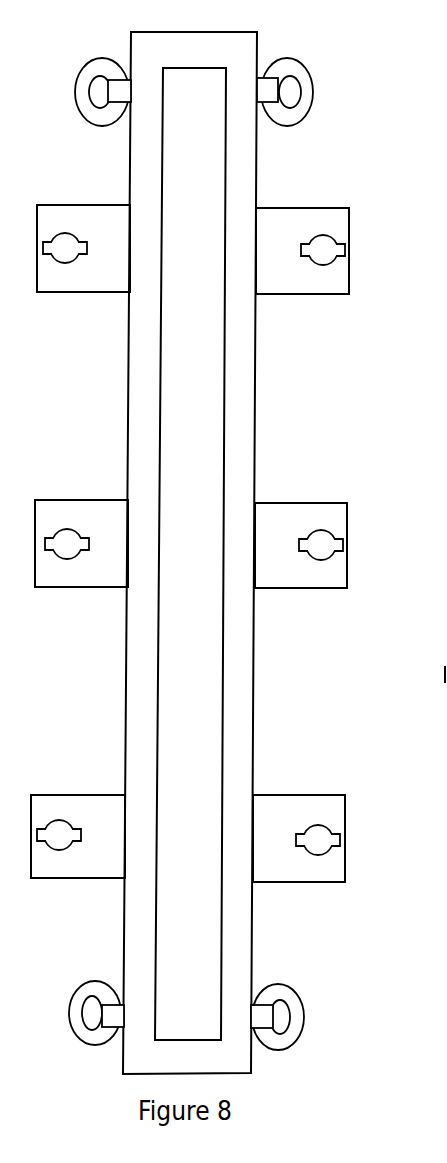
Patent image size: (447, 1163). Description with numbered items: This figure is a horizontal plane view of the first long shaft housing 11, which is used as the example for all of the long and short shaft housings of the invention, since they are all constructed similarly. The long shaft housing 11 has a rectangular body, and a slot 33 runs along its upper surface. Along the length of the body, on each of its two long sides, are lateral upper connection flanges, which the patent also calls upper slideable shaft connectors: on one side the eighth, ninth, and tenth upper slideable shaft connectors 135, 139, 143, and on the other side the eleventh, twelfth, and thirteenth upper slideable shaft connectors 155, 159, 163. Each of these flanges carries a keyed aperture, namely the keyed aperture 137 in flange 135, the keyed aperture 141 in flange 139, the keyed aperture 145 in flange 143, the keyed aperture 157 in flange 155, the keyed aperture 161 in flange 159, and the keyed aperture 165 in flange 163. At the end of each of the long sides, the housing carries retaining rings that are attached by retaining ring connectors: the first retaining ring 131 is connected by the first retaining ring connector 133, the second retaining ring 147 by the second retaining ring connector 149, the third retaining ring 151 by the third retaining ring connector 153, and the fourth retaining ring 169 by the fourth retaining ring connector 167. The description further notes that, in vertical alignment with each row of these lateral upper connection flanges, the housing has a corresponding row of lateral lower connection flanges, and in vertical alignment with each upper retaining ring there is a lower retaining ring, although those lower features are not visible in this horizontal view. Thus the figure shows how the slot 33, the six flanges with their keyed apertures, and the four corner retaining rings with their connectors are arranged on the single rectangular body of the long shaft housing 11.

The long shaft housing 11 is at (257, 390).
The slot 33 is at (225, 345).
The first retaining ring on first long shaft housing 131 is at (284, 58).
The first retaining ring connector on first long shaft housing 133 is at (290, 79).
The eighth upper slideable shaft connector 135 is at (304, 207).
The keyed aperture in eighth upper slideable shaft connector 137 is at (333, 237).
The ninth upper slideable shaft connector 139 is at (282, 503).
The keyed aperture in ninth upper slideable shaft connector 141 is at (333, 530).
The tenth upper slideable shaft connector 143 is at (330, 825).
The keyed aperture in tenth upper slideable shaft connector 145 is at (346, 852).
The second retaining ring on first long shaft housing 147 is at (280, 986).
The second retaining ring connector on first long shaft housing 149 is at (273, 1012).
The third retaining ring on first long shaft housing 151 is at (88, 63).
The third retaining ring connector on first long shaft housing 153 is at (100, 90).
The eleventh upper slideable shaft connector 155 is at (55, 235).
The keyed aperture in eleventh upper slideable shaft connector 157 is at (73, 293).
The twelfth upper slideable shaft connector 159 is at (55, 530).
The keyed aperture in twelfth upper slideable shaft connector 161 is at (70, 588).
The thirteenth upper slideable shaft connector 163 is at (47, 822).
The keyed aperture in thirteenth upper slideable shaft connector 165 is at (78, 879).
The fourth retaining ring connector on first long shaft housing 167 is at (102, 1013).
The fourth retaining ring on first long shaft housing 169 is at (73, 1036).